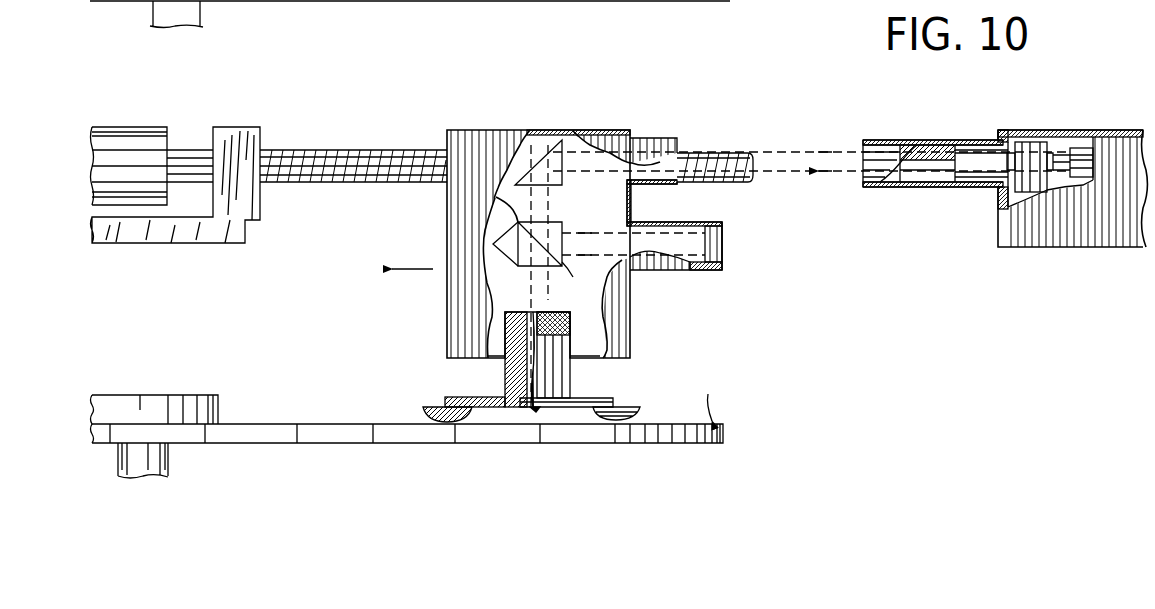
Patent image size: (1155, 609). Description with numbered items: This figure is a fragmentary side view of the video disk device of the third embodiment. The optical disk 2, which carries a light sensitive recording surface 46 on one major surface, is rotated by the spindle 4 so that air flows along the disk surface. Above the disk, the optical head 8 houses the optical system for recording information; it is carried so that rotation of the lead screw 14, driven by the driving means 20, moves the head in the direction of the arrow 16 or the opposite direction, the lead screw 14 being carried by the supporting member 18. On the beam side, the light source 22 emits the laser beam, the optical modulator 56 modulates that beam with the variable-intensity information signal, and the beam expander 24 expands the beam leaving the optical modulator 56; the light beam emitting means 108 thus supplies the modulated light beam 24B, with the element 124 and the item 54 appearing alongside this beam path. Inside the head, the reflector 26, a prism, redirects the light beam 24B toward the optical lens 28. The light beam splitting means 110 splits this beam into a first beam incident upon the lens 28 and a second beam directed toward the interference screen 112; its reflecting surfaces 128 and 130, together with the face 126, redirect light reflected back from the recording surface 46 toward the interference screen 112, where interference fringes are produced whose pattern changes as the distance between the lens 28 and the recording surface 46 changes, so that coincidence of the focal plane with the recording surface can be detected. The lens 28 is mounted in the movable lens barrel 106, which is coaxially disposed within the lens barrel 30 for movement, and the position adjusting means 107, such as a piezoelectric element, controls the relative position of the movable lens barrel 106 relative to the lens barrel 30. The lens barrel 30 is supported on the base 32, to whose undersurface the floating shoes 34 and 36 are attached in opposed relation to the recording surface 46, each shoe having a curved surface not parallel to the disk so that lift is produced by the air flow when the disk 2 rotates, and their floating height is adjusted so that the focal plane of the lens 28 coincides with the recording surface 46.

The optical disk 2 is at (725, 432).
The spindle 4 is at (160, 395).
The optical head 8 is at (497, 130).
The lead screw 14 is at (340, 183).
The arrow 16 is at (413, 255).
The supporting member 18 is at (228, 237).
The driving means 20 is at (145, 140).
The light source 22 is at (1083, 147).
The beam expander 24 is at (1062, 157).
The light beam 24B is at (783, 150).
The reflector 26 is at (562, 147).
The optical lens 28 is at (533, 412).
The lens barrel 30 is at (572, 375).
The base 32 is at (615, 402).
The floating shoe 34 is at (420, 420).
The floating shoe 36 is at (638, 409).
The recording surface 46 is at (692, 390).
The base member 54 is at (658, 1).
The optical modulator 56 is at (1033, 148).
The movable lens barrel 106 is at (520, 372).
The position adjusting means 107 is at (564, 333).
The light beam emitting means 108 is at (887, 140).
The light beam splitting means 110 is at (498, 190).
The interference screen 112 is at (723, 240).
The cable coupling 124 is at (945, 152).
The beam splitter face 126 is at (573, 277).
The reflecting surface 128 is at (535, 266).
The reflecting surface 130 is at (493, 245).